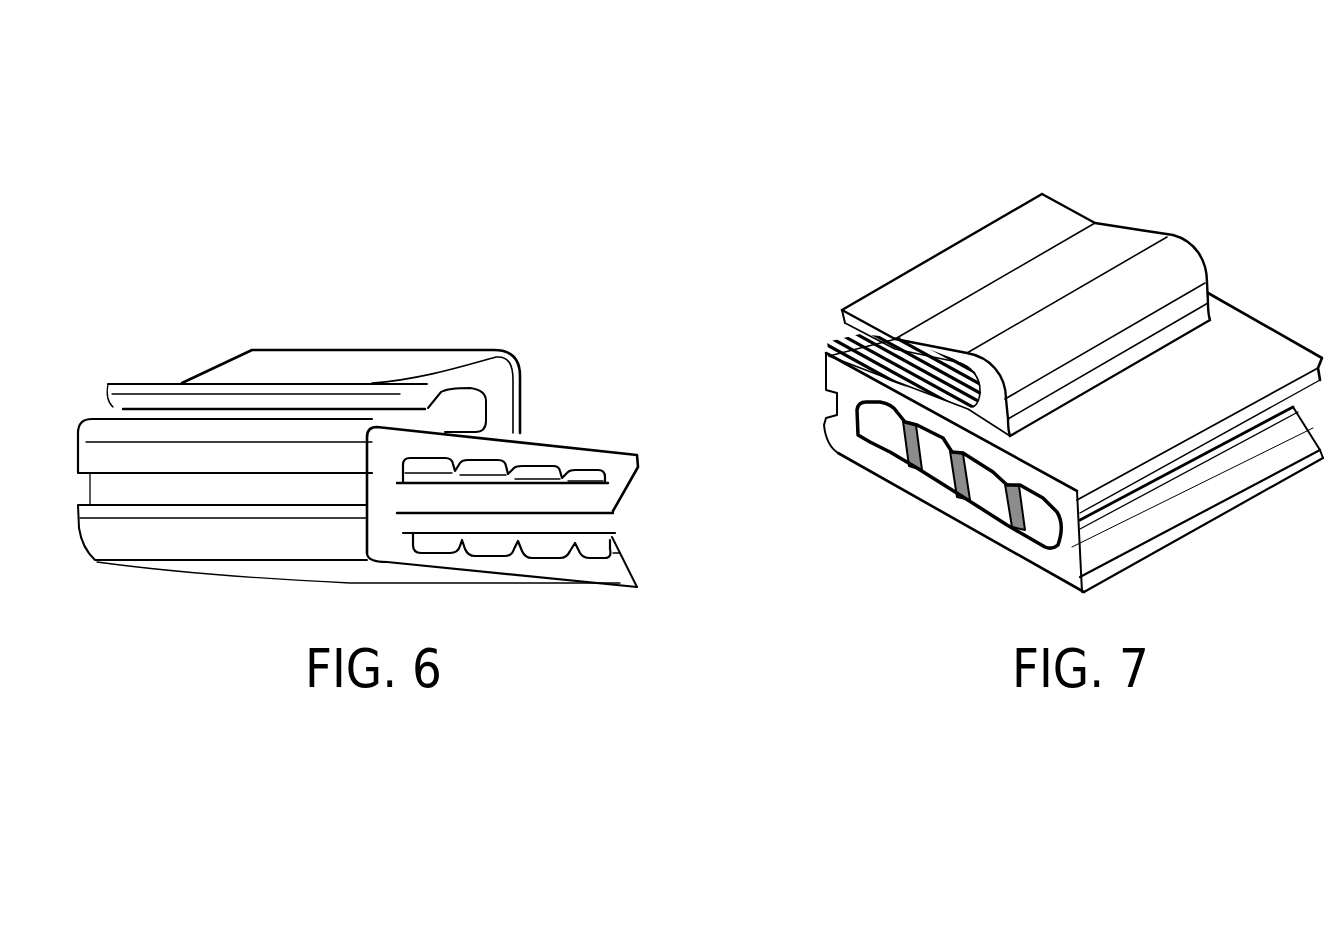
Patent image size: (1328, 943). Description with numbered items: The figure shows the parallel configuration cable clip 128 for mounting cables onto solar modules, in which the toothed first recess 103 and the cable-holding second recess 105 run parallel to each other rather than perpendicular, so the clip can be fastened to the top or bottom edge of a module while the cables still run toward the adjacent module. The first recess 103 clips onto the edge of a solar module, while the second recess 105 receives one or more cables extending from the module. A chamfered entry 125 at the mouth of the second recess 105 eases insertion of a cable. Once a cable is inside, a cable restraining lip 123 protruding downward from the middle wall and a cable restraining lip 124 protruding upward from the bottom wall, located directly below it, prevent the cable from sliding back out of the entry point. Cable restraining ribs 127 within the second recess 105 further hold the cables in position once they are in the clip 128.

In FIG. 6, the parallel configuration cable clip 128 is at (448, 321).
In FIG. 7, the parallel configuration cable clip 128 is at (884, 180).
In FIG. 6, the cable restraining ribs 127 is at (455, 468).
In FIG. 6, the first recess 103 is at (466, 414).
In FIG. 6, the chamfered entry 125 is at (625, 500).
In FIG. 7, the second recess 105 is at (880, 436).
In FIG. 7, the cable restraining lip 123 is at (1063, 520).
In FIG. 7, the cable restraining lip 124 is at (1060, 557).